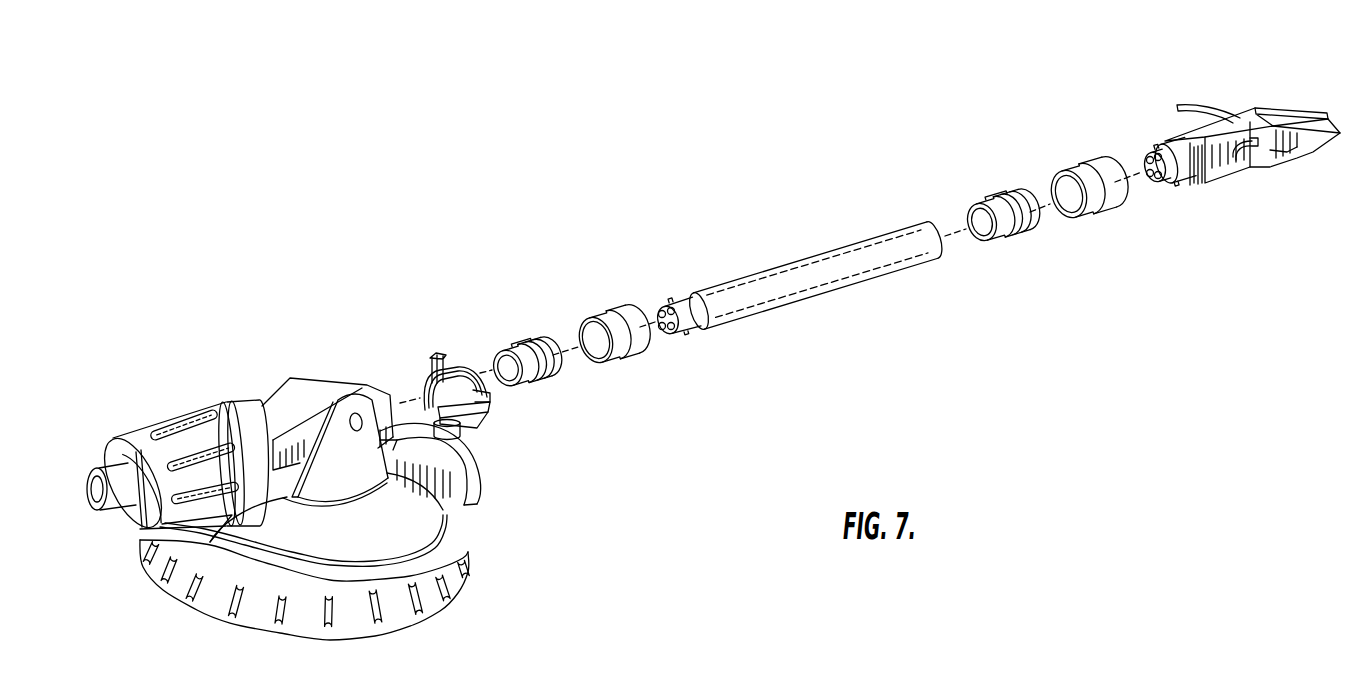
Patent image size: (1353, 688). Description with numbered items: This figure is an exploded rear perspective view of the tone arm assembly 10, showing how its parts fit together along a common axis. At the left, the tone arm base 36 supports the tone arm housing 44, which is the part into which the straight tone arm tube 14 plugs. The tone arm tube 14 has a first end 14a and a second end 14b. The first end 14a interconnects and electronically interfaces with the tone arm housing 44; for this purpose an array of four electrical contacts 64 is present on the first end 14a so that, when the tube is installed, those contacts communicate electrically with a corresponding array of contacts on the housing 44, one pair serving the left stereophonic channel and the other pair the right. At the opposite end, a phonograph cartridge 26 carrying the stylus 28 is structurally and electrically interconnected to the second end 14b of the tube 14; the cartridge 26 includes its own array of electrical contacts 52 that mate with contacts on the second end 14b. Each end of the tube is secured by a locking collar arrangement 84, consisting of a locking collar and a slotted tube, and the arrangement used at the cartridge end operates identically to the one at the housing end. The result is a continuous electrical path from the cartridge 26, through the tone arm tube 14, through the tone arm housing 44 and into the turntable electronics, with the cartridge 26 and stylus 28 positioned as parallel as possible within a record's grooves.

The tone arm assembly 10 is at (452, 279).
The straight tone arm tube 14 is at (810, 276).
The first end of tone arm tube 14a is at (698, 330).
The second end of tone arm tube 14b is at (937, 245).
The phonograph cartridge 26 is at (1250, 122).
The stylus 28 is at (1303, 157).
The tone arm base 36 is at (455, 583).
The tone arm housing 44 is at (338, 385).
The electrical contacts of cartridge 52 is at (1145, 185).
The electrical contacts on first end of tone arm tube 64 is at (660, 333).
The locking collar arrangement 84 is at (617, 300).